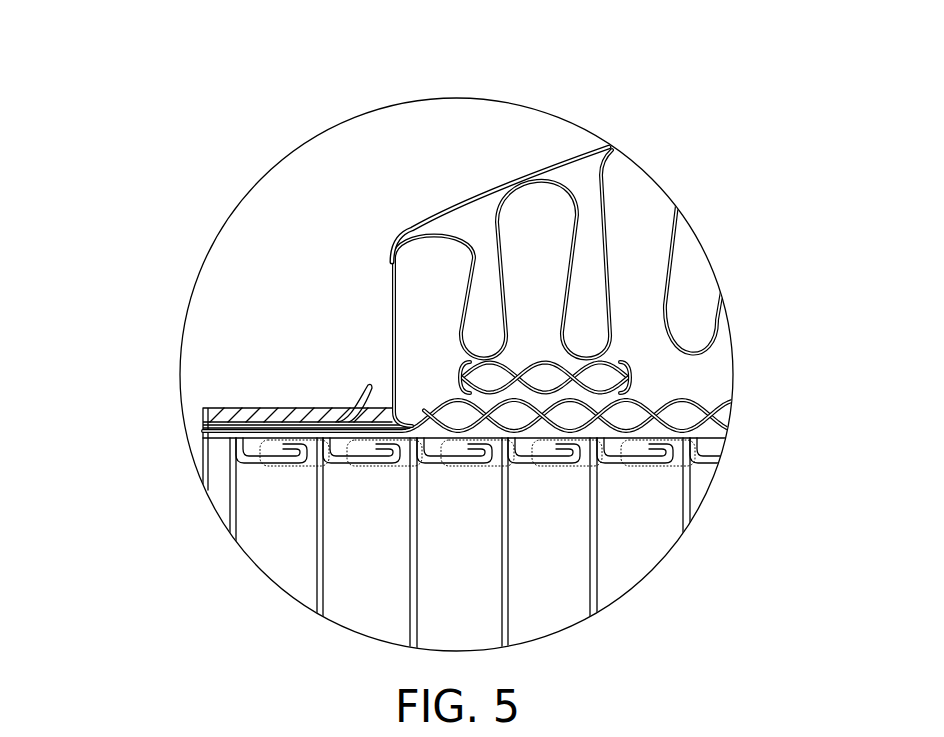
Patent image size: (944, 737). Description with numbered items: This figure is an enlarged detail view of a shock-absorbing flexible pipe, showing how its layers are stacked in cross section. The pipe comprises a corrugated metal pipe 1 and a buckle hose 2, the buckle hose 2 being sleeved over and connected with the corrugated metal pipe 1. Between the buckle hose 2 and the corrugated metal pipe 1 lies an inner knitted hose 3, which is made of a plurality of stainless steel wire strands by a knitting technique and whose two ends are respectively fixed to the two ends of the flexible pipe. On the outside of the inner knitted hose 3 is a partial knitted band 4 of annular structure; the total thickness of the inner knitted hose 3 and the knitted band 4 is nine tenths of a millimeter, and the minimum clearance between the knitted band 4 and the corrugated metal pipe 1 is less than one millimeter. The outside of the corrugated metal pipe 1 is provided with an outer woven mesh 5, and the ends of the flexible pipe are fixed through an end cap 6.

The corrugated metal pipe 1 is at (505, 277).
The buckle hose 2 is at (410, 550).
The inner knitted hose 3 is at (695, 402).
The knitted band 4 is at (620, 367).
The outer woven mesh 5 is at (572, 152).
The end cap 6 is at (290, 410).